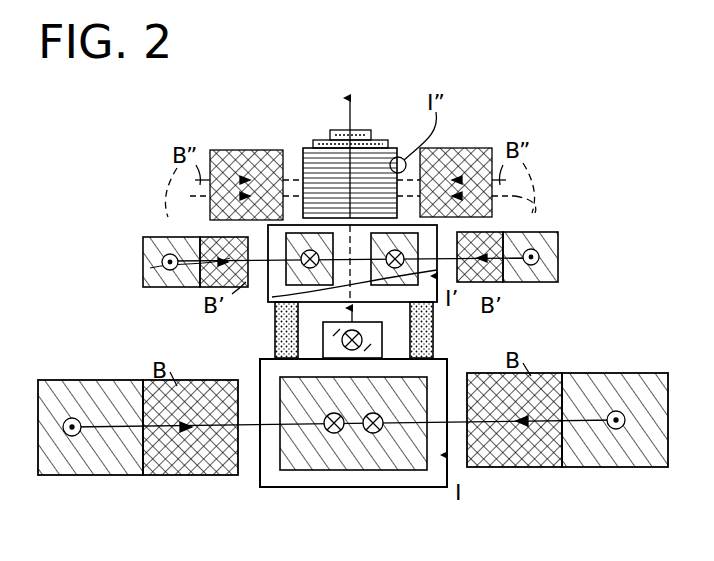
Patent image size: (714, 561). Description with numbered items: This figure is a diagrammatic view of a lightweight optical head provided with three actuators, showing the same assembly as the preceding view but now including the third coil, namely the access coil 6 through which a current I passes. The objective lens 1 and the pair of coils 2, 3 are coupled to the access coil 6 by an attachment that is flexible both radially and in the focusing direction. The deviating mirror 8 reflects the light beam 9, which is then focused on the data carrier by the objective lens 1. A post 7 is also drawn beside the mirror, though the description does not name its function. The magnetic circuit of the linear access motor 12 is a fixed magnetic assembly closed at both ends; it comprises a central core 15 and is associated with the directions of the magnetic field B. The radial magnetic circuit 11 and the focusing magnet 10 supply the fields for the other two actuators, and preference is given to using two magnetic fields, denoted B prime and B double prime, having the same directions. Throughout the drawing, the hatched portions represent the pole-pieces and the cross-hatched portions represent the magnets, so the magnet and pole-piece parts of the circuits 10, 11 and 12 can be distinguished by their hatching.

The objective lens 1 is at (360, 135).
The coil 2 is at (402, 157).
The coil 3 is at (440, 228).
The access coil 6 is at (405, 487).
The support post 7 is at (433, 338).
The deviating mirror 8 is at (323, 346).
The light beam 9 is at (349, 120).
The focusing magnet 10 is at (255, 142).
The radial magnetic circuit 11 is at (143, 262).
The magnetic circuit of the linear access motor 12 is at (117, 463).
The central core 15 is at (337, 458).